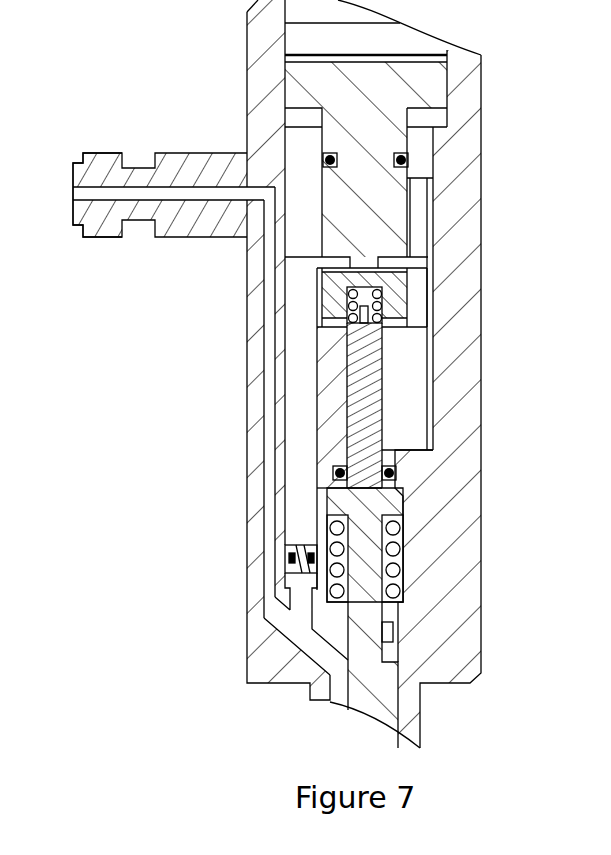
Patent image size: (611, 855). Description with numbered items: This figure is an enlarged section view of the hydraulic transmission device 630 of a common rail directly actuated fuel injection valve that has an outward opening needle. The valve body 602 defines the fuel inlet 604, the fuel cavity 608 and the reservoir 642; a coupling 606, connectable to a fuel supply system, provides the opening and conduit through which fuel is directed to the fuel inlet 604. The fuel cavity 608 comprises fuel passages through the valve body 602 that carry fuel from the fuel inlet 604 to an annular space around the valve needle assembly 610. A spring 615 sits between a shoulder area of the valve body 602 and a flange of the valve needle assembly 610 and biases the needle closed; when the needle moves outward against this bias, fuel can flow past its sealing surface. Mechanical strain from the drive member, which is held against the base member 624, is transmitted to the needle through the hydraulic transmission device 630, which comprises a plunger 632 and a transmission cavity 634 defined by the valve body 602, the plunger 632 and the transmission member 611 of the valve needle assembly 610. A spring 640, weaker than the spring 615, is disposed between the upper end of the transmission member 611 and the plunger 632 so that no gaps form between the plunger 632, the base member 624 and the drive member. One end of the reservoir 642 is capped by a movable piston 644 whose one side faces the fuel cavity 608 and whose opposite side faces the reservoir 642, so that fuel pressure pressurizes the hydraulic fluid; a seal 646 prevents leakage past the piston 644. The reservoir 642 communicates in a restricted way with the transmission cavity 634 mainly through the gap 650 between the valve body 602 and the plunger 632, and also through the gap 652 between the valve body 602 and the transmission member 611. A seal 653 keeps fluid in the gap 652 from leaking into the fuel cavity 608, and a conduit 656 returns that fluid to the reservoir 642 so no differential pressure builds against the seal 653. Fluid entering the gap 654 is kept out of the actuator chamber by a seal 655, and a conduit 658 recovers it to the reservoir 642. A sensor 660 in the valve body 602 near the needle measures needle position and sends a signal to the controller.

The valve body 602 is at (462, 513).
The fuel inlet 604 is at (253, 193).
The coupling 606 is at (115, 163).
The fuel cavity 608 is at (283, 620).
The valve needle assembly 610 is at (370, 712).
The transmission member 611 is at (372, 385).
The spring 615 is at (398, 573).
The base member 624 is at (330, 93).
The hydraulic transmission device 630 is at (202, 315).
The plunger 632 is at (400, 258).
The transmission cavity 634 is at (385, 312).
The spring 640 is at (390, 292).
The reservoir 642 is at (300, 460).
The piston 644 is at (300, 548).
The seal 646 is at (285, 555).
The gap 650 is at (330, 300).
The gap 652 is at (330, 407).
The seal 653 is at (396, 470).
The gap 654 is at (432, 215).
The seal 655 is at (410, 158).
The conduit 656 is at (395, 452).
The conduit 658 is at (415, 178).
The sensor 660 is at (395, 625).